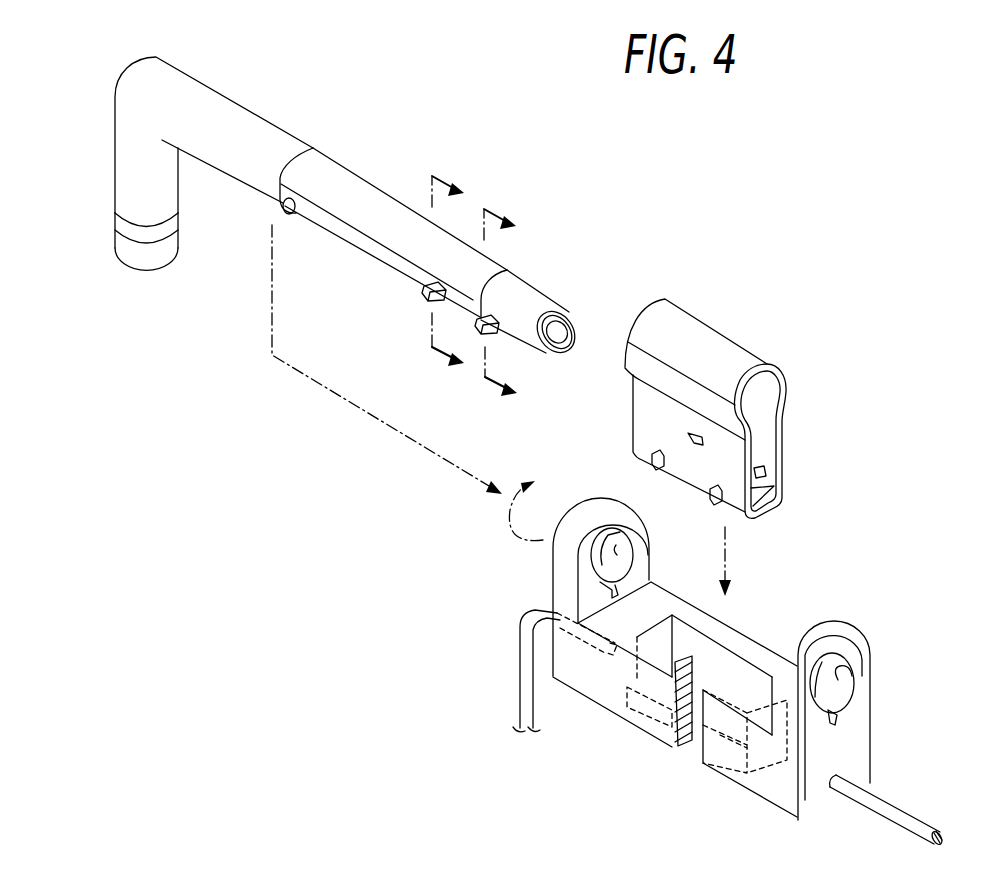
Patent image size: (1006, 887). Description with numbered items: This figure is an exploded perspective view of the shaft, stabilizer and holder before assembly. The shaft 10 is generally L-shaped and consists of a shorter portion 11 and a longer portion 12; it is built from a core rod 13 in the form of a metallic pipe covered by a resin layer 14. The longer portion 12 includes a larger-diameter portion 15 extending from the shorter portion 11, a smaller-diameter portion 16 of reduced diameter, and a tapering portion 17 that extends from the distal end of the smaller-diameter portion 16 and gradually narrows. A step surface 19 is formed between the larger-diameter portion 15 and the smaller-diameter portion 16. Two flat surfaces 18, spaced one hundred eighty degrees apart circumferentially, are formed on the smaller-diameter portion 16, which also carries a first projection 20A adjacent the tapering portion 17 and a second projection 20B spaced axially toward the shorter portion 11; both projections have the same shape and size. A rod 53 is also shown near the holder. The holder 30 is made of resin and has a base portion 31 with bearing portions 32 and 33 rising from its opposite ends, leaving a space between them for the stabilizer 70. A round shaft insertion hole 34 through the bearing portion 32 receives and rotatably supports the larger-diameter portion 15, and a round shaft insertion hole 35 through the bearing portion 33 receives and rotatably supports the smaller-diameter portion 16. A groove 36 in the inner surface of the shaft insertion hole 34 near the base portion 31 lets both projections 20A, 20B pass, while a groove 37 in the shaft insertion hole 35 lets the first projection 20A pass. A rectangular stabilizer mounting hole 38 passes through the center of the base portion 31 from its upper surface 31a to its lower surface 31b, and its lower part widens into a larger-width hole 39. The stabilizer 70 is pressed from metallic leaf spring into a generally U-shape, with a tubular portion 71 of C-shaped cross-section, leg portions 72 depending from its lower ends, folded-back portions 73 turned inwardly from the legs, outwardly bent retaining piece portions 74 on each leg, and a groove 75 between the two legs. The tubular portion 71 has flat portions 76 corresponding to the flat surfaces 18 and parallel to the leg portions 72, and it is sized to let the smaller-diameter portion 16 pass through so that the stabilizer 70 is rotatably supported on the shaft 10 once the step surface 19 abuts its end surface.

The shaft 10 is at (325, 121).
The shorter portion 11 is at (115, 193).
The longer portion 12 is at (243, 103).
The core rod 13 is at (560, 357).
The resin layer 14 is at (452, 233).
The larger-diameter portion 15 is at (228, 168).
The smaller-diameter portion 16 is at (367, 193).
The tapering portion 17 is at (518, 292).
The flat surfaces 18 is at (363, 247).
The step surface 19 is at (295, 214).
The first projection 20A is at (480, 333).
The second projection 20B is at (425, 302).
The holder 30 is at (898, 708).
The base portion 31 is at (787, 808).
The upper surface 31a is at (727, 633).
The lower surface 31b is at (757, 780).
The bearing portion 32 is at (562, 567).
The bearing portion 33 is at (868, 653).
The shaft insertion hole 34 is at (617, 555).
The shaft insertion hole 35 is at (842, 681).
The groove (passage portion) 36 is at (620, 592).
The groove (passage portion) 37 is at (840, 718).
The stabilizer mounting hole 38 is at (740, 673).
The larger-width hole 39 is at (718, 777).
The rod 53 is at (897, 807).
The stabilizer 70 is at (714, 298).
The tubular portion 71 is at (730, 349).
The leg portions 72 is at (645, 420).
The folded-back portions 73 is at (774, 491).
The retaining piece portions 74 is at (655, 468).
The groove (passage portion) 75 is at (762, 445).
The flat portions 76 is at (628, 357).